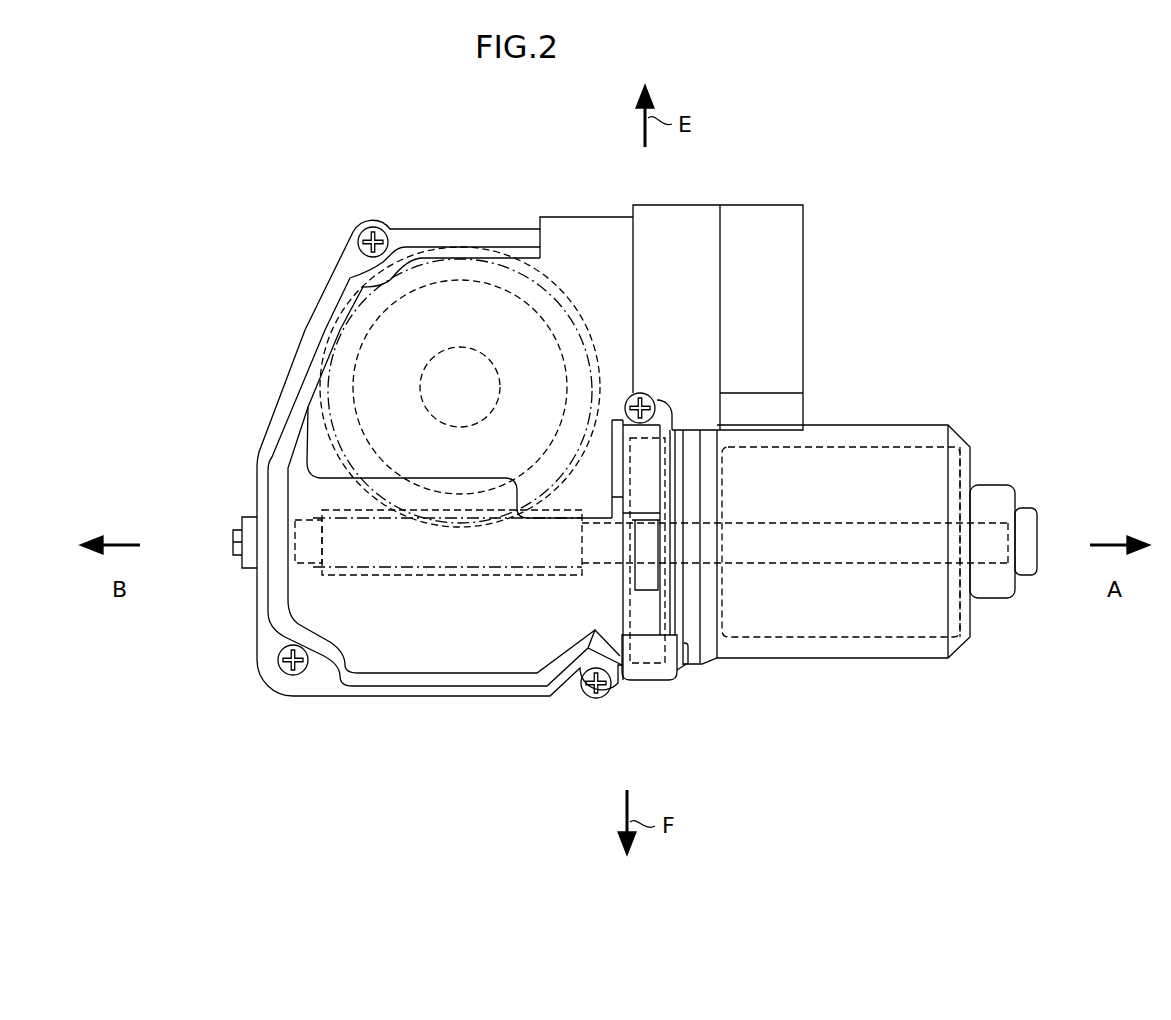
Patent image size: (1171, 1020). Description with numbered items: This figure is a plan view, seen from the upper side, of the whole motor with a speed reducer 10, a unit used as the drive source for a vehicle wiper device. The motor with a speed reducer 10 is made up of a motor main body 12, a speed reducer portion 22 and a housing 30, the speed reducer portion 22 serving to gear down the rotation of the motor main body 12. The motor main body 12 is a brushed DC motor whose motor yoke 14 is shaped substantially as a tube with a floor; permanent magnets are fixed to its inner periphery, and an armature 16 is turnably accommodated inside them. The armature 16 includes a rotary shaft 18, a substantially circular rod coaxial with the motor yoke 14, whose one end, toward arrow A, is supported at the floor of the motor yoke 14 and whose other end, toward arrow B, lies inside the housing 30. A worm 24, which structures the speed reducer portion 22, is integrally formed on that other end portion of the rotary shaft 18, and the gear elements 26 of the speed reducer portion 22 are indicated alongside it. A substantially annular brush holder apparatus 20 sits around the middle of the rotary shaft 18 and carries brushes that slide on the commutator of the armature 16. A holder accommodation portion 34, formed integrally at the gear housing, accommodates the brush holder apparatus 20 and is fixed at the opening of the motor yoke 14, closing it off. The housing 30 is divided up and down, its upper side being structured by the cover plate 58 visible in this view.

The motor with a speed reducer 10 is at (942, 202).
The motor main body 12 is at (944, 421).
The motor yoke 14 is at (901, 660).
The armature 16 is at (877, 447).
The rotary shaft 18 is at (995, 523).
The brush holder apparatus 20 is at (647, 665).
The speed reducer portion 22 is at (369, 411).
The worm 24 is at (335, 505).
The worm wheel 26 is at (327, 420).
The housing 30 is at (280, 683).
The holder accommodation portion 34 is at (637, 690).
The cover plate 58 is at (442, 657).